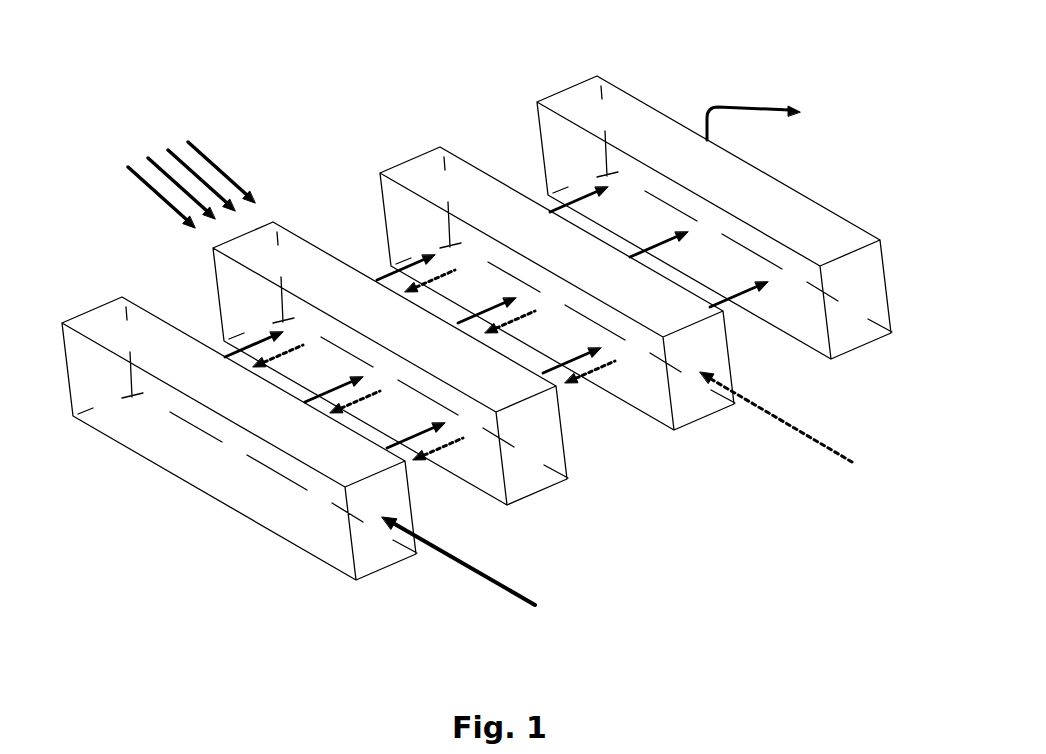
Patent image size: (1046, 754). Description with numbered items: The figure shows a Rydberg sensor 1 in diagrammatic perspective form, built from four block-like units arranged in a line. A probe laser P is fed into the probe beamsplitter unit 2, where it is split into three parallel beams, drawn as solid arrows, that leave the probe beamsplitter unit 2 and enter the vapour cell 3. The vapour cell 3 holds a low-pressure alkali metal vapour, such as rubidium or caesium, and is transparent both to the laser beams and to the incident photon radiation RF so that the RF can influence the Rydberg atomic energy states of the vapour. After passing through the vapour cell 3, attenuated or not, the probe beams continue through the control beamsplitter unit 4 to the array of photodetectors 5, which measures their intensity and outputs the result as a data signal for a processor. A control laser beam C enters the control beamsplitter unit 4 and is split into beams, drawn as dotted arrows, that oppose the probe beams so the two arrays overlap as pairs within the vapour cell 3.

The Rydberg sensor 1 is at (477, 317).
The probe beamsplitter unit 2 is at (239, 413).
The vapour cell 3 is at (390, 341).
The control beamsplitter unit 4 is at (555, 267).
The array of photodetectors 5 is at (714, 196).